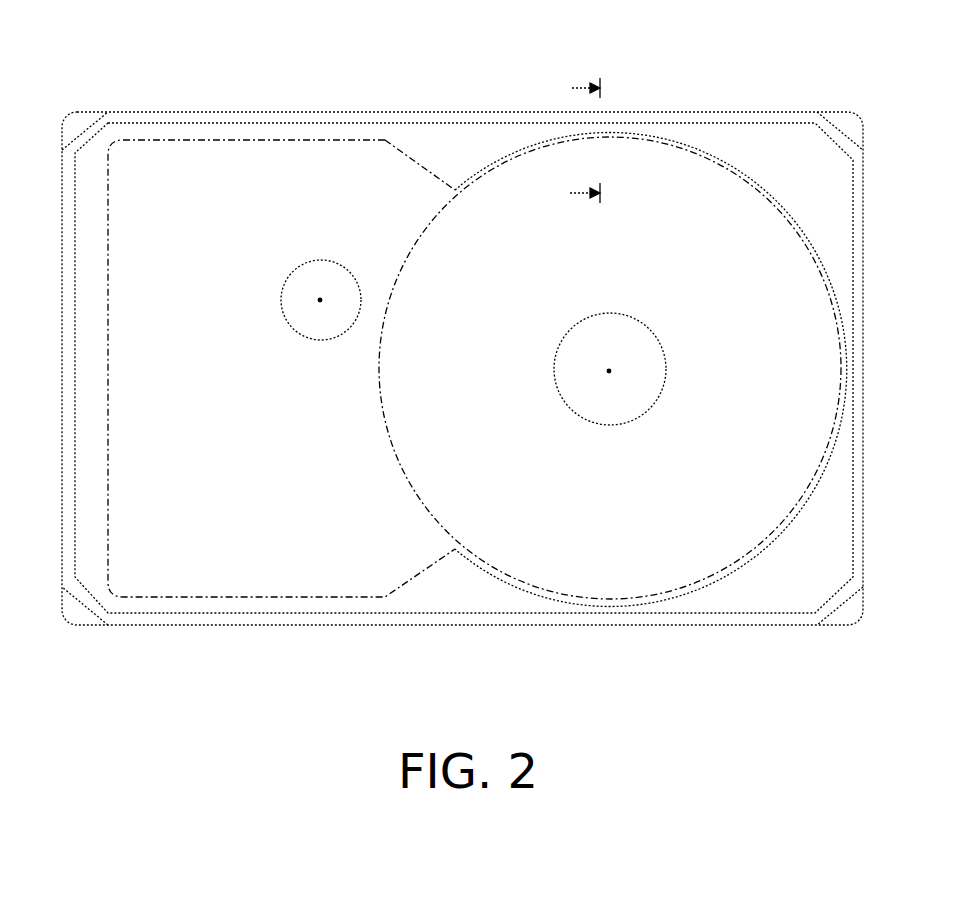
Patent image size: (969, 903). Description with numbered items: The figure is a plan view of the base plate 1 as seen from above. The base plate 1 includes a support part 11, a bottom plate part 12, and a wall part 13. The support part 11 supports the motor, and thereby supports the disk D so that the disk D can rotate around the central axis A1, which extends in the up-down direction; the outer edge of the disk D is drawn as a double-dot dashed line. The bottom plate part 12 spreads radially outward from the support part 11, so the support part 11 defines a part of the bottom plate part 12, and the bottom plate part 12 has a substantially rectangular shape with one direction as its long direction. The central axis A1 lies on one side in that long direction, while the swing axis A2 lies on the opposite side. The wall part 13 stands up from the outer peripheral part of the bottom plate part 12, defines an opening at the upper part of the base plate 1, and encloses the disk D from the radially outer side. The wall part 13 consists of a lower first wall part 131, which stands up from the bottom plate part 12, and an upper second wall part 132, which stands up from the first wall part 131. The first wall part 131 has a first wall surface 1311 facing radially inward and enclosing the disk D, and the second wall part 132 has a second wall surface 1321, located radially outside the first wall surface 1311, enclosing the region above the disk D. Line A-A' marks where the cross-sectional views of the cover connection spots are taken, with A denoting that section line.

The base plate 1 is at (243, 98).
The support part 11 is at (610, 495).
The bottom plate part 12 is at (697, 437).
The wall part 13 is at (464, 321).
The first wall part 131 is at (727, 63).
The second wall part 132 is at (706, 120).
The first wall surface 1311 is at (565, 137).
The second wall surface 1321 is at (500, 123).
The disk D is at (430, 222).
The central axis A1 is at (613, 397).
The swing axis A2 is at (321, 300).
The line A-A' A is at (585, 132).